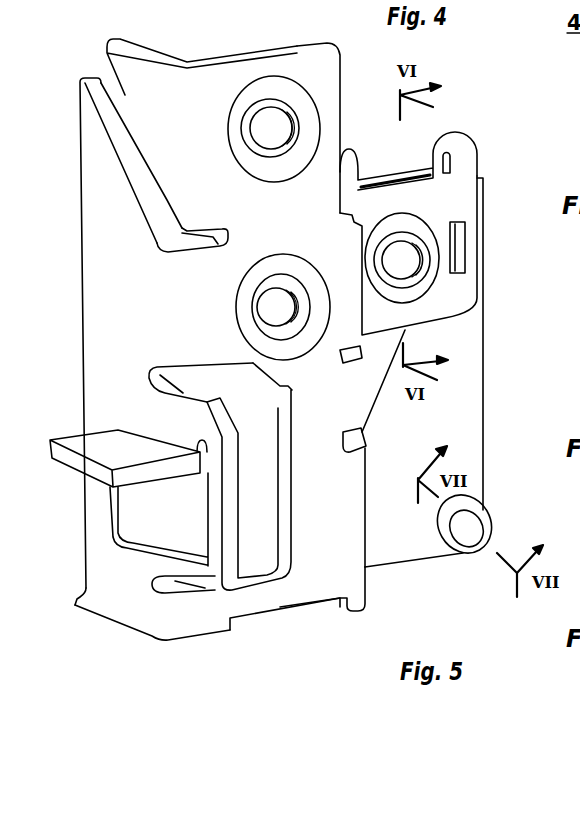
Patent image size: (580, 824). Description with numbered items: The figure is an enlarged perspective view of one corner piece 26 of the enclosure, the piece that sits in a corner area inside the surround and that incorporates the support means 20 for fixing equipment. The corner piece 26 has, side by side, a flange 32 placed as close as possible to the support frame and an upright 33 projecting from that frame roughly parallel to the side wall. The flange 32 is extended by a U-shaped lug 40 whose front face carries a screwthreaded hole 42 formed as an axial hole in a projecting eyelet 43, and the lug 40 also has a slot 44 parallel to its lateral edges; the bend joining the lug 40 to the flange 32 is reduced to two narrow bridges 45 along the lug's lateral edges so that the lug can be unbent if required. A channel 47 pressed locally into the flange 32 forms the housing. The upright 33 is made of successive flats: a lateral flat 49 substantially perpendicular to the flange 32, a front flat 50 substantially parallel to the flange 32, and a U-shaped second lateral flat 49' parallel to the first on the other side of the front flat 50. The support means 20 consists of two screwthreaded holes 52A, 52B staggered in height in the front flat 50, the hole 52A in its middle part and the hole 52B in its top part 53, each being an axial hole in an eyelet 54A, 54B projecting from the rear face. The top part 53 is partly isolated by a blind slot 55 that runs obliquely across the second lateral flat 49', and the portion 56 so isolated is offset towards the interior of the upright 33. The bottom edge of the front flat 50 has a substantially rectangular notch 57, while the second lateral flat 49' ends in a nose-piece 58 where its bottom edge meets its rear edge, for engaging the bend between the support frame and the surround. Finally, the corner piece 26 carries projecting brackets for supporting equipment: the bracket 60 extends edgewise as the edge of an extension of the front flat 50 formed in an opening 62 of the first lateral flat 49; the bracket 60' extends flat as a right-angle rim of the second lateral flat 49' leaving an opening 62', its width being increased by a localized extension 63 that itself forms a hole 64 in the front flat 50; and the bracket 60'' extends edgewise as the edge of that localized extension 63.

The support means 20 is at (238, 263).
The corner piece 26 is at (387, 570).
The flange 32 is at (486, 447).
The upright 33 is at (80, 167).
The U-shaped lug 40 is at (472, 307).
The screwthreaded hole 42 is at (423, 265).
The eyelet 43 is at (422, 217).
The slot 44 is at (455, 278).
The bridges 45 is at (347, 167).
The channel 47 is at (477, 532).
The lateral flat 49 is at (428, 524).
The second lateral flat 49' is at (150, 648).
The front flat 50 is at (322, 587).
The screwthreaded hole 52A is at (289, 275).
The screwthreaded hole 52B is at (268, 153).
The top part 53 is at (328, 65).
The eyelet 54A is at (272, 320).
The eyelet 54B is at (263, 147).
The blind slot 55 is at (195, 237).
The portion 56 is at (130, 75).
The notch 57 is at (243, 617).
The nose-piece 58 is at (75, 610).
The bracket 60 is at (346, 304).
The bracket 60' is at (117, 438).
The bracket 60'' is at (177, 366).
The opening 62 is at (445, 412).
The opening 62' is at (159, 519).
The localized extension 63 is at (220, 583).
The hole 64 is at (255, 380).